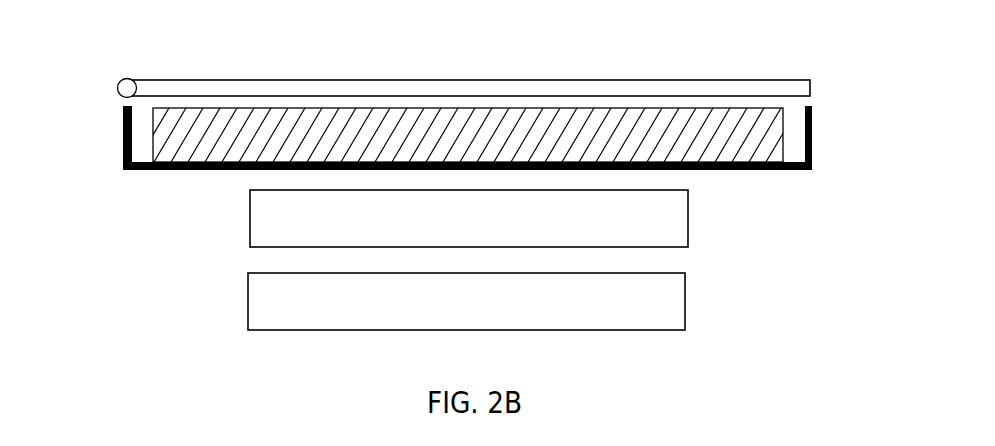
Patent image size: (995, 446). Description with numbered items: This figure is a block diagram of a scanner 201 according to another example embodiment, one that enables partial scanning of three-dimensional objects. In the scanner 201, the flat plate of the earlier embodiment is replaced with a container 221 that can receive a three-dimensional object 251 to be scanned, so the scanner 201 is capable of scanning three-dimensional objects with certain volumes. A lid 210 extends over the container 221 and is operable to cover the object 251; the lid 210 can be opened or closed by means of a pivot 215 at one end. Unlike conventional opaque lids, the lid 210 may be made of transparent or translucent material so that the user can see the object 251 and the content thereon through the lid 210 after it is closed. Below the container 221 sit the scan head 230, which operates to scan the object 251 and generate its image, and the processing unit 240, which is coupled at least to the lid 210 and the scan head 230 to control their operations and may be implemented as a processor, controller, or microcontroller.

The scanner 201 is at (464, 88).
The lid 210 is at (508, 80).
The pivot 215 is at (89, 75).
The container 221 is at (504, 138).
The 3D object 251 is at (467, 101).
The scan head 230 is at (506, 218).
The processing unit 240 is at (505, 301).